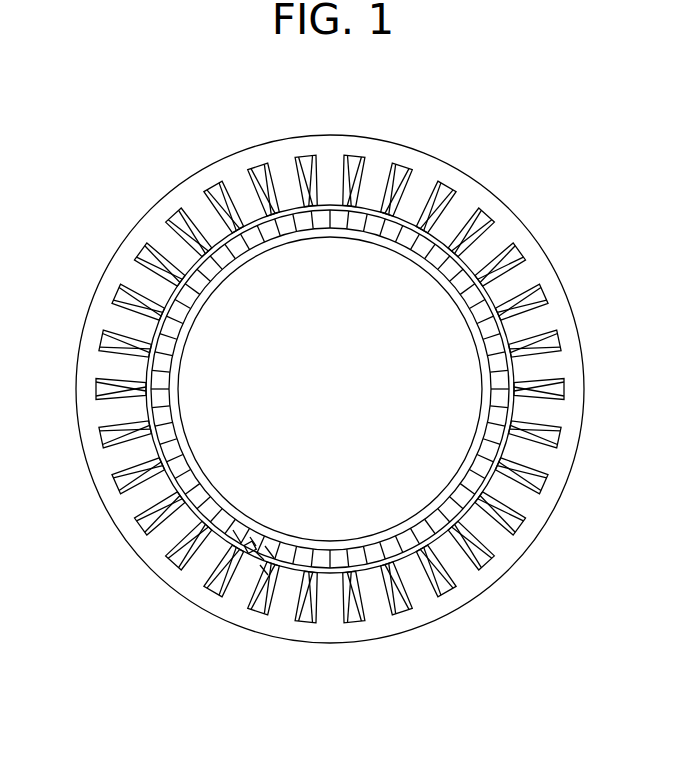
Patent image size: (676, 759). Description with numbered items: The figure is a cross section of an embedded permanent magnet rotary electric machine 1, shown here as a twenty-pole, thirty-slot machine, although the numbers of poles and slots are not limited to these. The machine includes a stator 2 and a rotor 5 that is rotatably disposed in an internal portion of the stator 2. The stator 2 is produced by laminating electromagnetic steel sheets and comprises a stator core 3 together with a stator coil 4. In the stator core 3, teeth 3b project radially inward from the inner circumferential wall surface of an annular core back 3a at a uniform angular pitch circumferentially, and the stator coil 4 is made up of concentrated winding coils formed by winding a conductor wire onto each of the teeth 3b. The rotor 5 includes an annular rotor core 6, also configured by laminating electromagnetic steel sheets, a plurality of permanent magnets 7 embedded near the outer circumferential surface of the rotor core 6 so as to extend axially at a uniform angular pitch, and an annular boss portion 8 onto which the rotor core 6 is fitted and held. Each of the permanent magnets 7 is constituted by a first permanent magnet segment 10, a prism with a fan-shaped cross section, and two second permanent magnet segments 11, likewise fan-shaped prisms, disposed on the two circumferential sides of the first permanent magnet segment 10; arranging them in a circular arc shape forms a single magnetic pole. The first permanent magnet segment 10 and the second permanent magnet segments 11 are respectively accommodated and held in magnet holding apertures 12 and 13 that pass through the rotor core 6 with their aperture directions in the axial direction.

The embedded permanent magnet rotary electric machine 1 is at (50, 128).
The stator 2 is at (527, 140).
The stator core 3 is at (490, 189).
The annular core back 3a is at (390, 153).
The teeth 3b is at (420, 195).
The stator coil 4 is at (495, 223).
The rotor 5 is at (262, 337).
The annular rotor core 6 is at (190, 323).
The permanent magnets 7 is at (165, 368).
The annular boss portion 8 is at (175, 412).
The first permanent magnet segment 10 is at (251, 547).
The second permanent magnet segments 11 is at (237, 537).
The magnet holding aperture 12 is at (260, 555).
The magnet holding apertures 13 is at (252, 540).